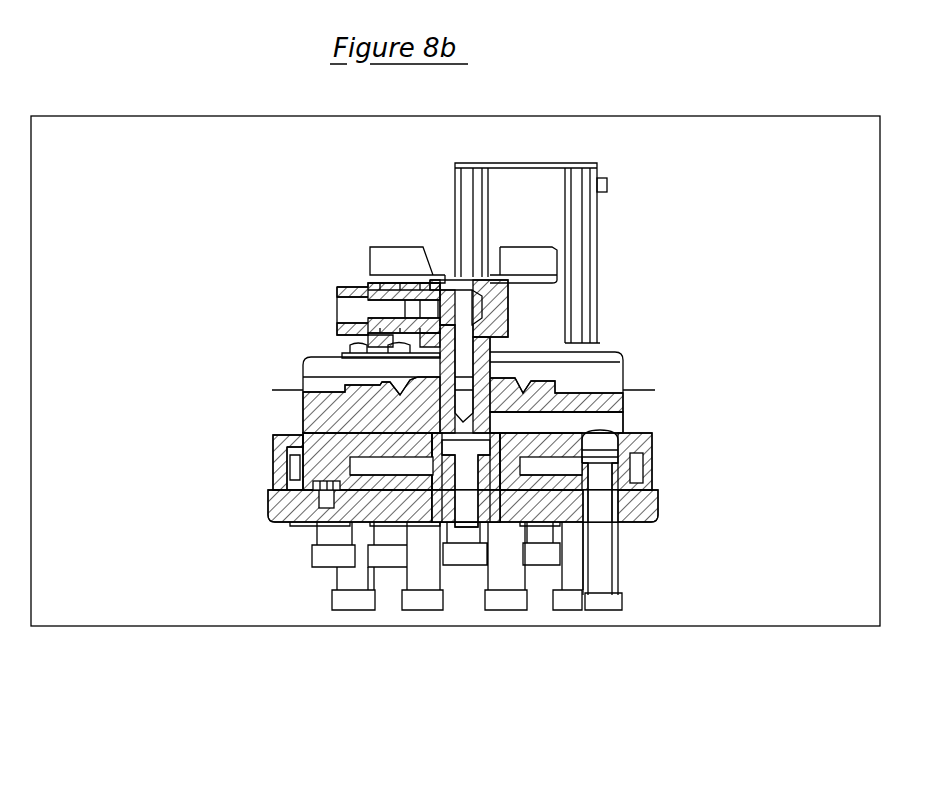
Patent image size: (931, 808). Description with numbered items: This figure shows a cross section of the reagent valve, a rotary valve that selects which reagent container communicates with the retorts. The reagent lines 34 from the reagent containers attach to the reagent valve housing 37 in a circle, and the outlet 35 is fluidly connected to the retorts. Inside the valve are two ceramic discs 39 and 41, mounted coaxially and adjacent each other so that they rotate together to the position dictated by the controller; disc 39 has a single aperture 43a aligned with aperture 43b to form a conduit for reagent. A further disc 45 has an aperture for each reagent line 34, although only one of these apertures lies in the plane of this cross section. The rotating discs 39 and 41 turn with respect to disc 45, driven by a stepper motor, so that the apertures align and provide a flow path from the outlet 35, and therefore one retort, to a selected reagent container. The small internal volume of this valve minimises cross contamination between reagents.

The reagent lines 34 is at (693, 670).
The outlet 35 is at (344, 298).
The reagent valve housing 37 is at (287, 525).
The ceramic disc 39 is at (300, 465).
The ceramic disc 41 is at (323, 405).
The aperture 43a is at (607, 462).
The aperture 43b is at (600, 428).
The disc 45 is at (290, 498).